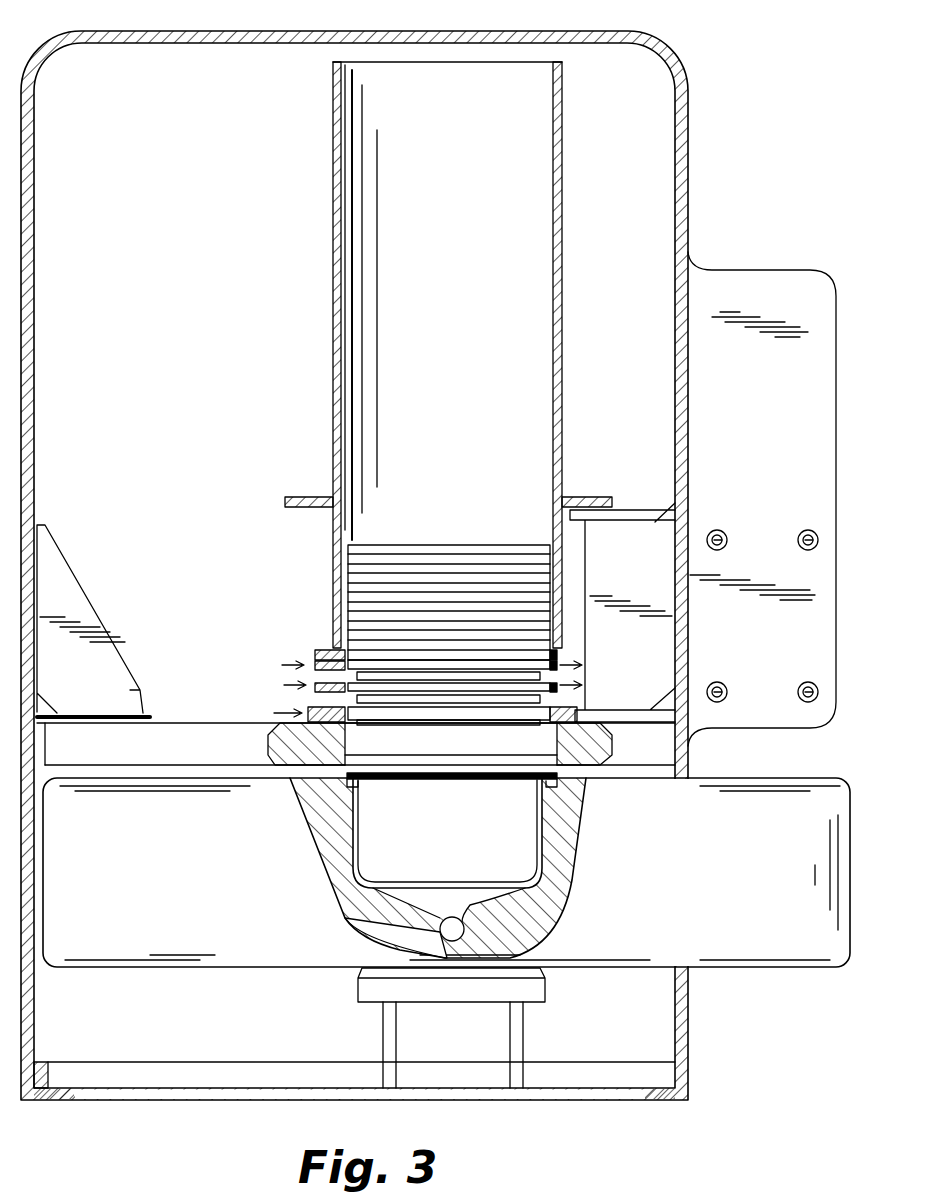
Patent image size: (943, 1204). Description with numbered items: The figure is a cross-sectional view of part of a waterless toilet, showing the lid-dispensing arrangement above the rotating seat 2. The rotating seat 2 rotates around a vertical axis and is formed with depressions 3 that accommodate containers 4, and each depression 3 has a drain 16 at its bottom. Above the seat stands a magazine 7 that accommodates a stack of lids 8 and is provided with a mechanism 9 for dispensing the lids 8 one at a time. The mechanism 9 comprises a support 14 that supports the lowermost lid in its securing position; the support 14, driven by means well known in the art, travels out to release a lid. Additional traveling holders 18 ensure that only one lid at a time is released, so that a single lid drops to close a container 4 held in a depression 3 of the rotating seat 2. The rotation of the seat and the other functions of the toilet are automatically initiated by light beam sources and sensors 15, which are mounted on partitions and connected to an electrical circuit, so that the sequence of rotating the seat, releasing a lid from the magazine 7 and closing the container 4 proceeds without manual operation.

The rotating seat 2 is at (183, 880).
The depressions 3 is at (545, 884).
The containers 4 is at (418, 882).
The magazine 7 is at (564, 400).
The lids 8 is at (425, 548).
The mechanism for dispensing lids 9 is at (326, 650).
The support 14 is at (306, 714).
The light beam sources and sensors 15 is at (802, 534).
The drain 16 is at (445, 933).
The traveling holders 18 is at (312, 664).